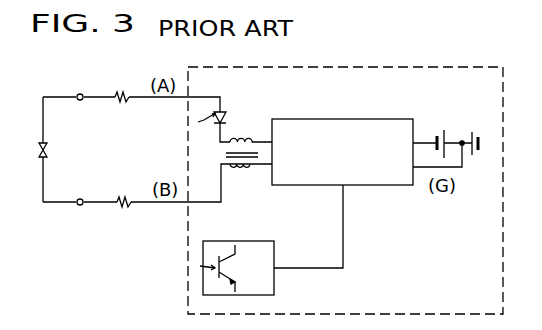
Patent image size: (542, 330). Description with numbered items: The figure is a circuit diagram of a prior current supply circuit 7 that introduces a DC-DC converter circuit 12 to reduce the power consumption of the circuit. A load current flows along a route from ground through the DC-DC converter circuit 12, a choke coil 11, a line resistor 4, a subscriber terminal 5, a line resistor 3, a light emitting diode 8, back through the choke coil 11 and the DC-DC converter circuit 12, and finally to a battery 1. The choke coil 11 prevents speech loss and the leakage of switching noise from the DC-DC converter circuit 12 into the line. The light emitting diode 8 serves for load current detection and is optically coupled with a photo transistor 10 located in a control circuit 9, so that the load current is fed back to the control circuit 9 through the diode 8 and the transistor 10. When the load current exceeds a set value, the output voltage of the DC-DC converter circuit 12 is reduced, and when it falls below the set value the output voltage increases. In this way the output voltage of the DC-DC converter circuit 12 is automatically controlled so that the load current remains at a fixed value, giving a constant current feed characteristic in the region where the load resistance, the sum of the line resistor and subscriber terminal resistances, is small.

The battery 1 is at (441, 130).
The line resistor 3 is at (116, 92).
The line resistor 4 is at (118, 205).
The subscriber terminal 5 is at (40, 152).
The current supply circuit 7 is at (340, 67).
The light emitting diode 8 is at (224, 118).
The control circuit 9 is at (275, 278).
The photo transistor 10 is at (256, 253).
The choke coil 11 is at (259, 200).
The DC-DC converter circuit 12 is at (304, 119).